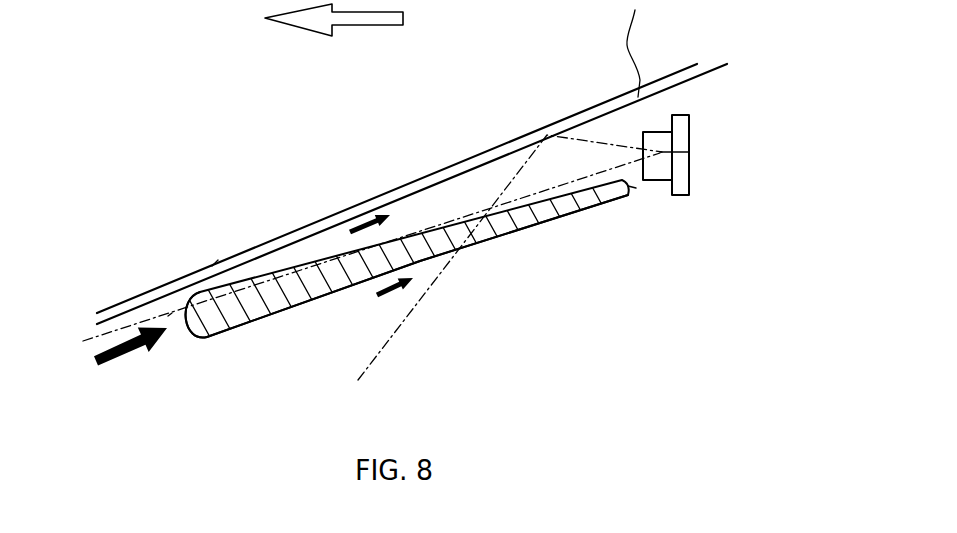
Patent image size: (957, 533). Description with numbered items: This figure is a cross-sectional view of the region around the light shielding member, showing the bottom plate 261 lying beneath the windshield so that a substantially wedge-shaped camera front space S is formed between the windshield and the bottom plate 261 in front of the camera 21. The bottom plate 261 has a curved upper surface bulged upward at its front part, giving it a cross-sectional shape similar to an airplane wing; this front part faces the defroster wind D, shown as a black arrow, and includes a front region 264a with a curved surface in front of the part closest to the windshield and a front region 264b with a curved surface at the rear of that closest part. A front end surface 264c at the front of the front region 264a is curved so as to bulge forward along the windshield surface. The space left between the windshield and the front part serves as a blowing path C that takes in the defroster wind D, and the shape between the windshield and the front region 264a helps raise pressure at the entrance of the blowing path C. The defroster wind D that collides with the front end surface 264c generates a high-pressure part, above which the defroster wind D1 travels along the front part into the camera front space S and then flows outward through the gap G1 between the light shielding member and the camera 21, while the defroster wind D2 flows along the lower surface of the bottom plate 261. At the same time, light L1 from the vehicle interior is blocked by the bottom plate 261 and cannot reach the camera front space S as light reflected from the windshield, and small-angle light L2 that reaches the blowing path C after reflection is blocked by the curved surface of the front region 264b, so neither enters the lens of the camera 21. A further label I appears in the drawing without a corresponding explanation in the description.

The camera 21 is at (690, 150).
The camera front space S is at (470, 190).
The bottom plate 261 is at (438, 258).
The front region 264a is at (173, 296).
The front region 264b is at (243, 280).
The front end surface 264c is at (193, 331).
The blowing path C is at (215, 261).
The inclination gap I is at (169, 318).
The defroster wind D is at (130, 355).
The defroster wind D1 is at (358, 225).
The defroster wind D2 is at (386, 301).
The light L1 is at (499, 274).
The light L2 is at (348, 258).
The gap G1 is at (633, 184).